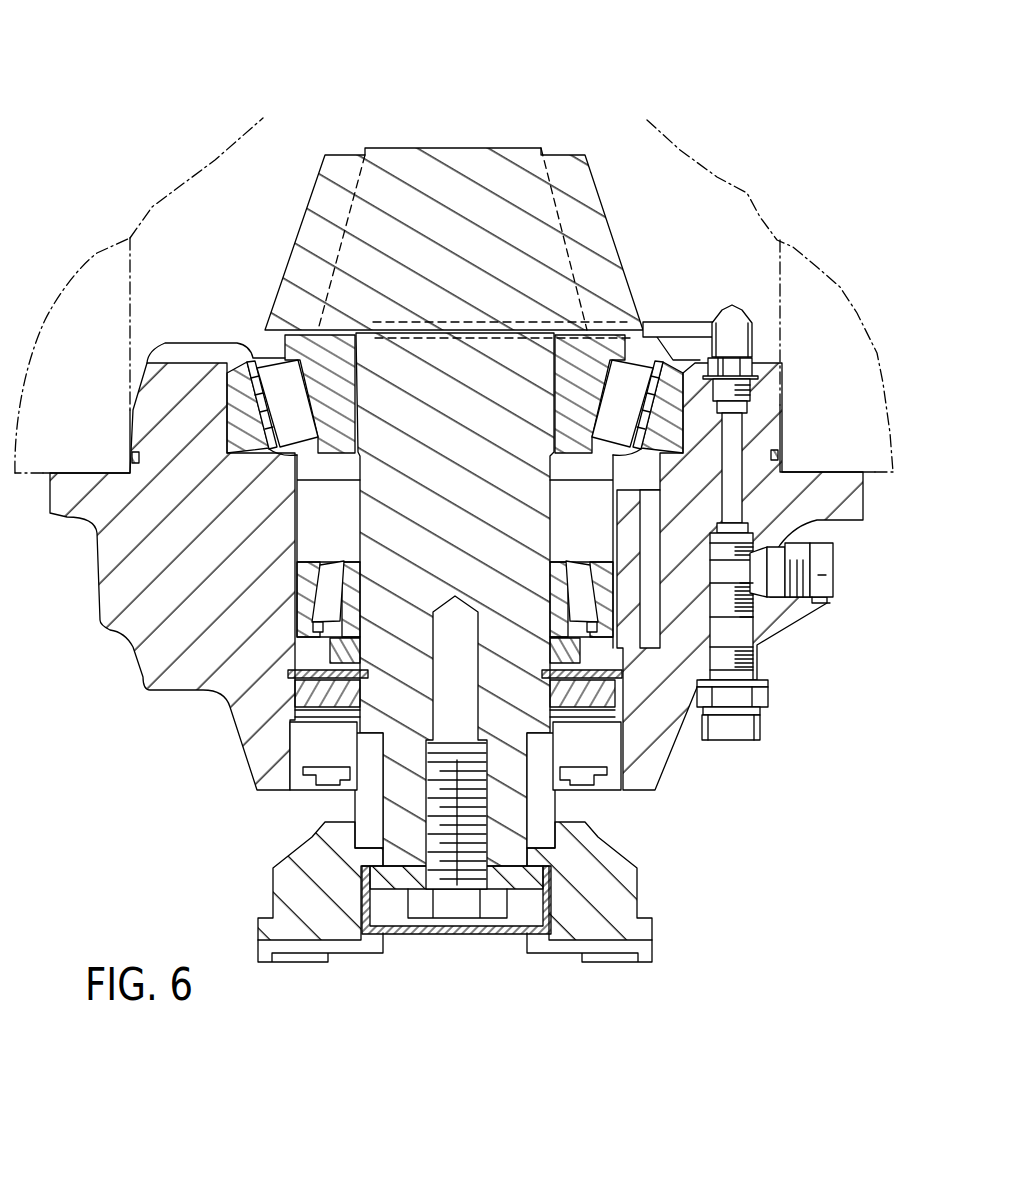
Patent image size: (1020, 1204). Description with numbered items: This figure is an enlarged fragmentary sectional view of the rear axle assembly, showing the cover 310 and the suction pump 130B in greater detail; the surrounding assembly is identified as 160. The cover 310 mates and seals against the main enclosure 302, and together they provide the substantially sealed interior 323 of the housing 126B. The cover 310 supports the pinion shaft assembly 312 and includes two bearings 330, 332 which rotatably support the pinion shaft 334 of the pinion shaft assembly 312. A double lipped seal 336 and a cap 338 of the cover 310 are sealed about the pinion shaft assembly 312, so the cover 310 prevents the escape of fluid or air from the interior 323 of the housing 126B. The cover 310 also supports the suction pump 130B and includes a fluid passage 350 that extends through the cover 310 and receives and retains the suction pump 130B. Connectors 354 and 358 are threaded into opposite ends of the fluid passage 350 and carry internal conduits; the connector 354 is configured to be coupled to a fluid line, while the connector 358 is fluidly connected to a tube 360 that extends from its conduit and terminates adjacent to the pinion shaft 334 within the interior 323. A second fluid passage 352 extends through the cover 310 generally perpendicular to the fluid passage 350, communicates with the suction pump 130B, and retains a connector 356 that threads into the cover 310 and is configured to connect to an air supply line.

The drive assembly 160 is at (165, 85).
The sealed interior 323 is at (205, 230).
The pinion shaft 334 is at (307, 190).
The housing 126B is at (800, 243).
The tube 360 is at (673, 327).
The connector 358 is at (753, 342).
The bearing 330 is at (280, 365).
The fluid passage 350 is at (723, 470).
The bearing 332 is at (313, 556).
The main enclosure 302 is at (43, 475).
The cover 310 is at (110, 578).
The fluid passage 352 is at (817, 528).
The connector 356 is at (827, 600).
The suction pump 130B is at (757, 603).
The double lipped seal 336 is at (293, 712).
The connector 354 is at (763, 724).
The pinion shaft assembly 312 is at (303, 848).
The cap 338 is at (585, 785).